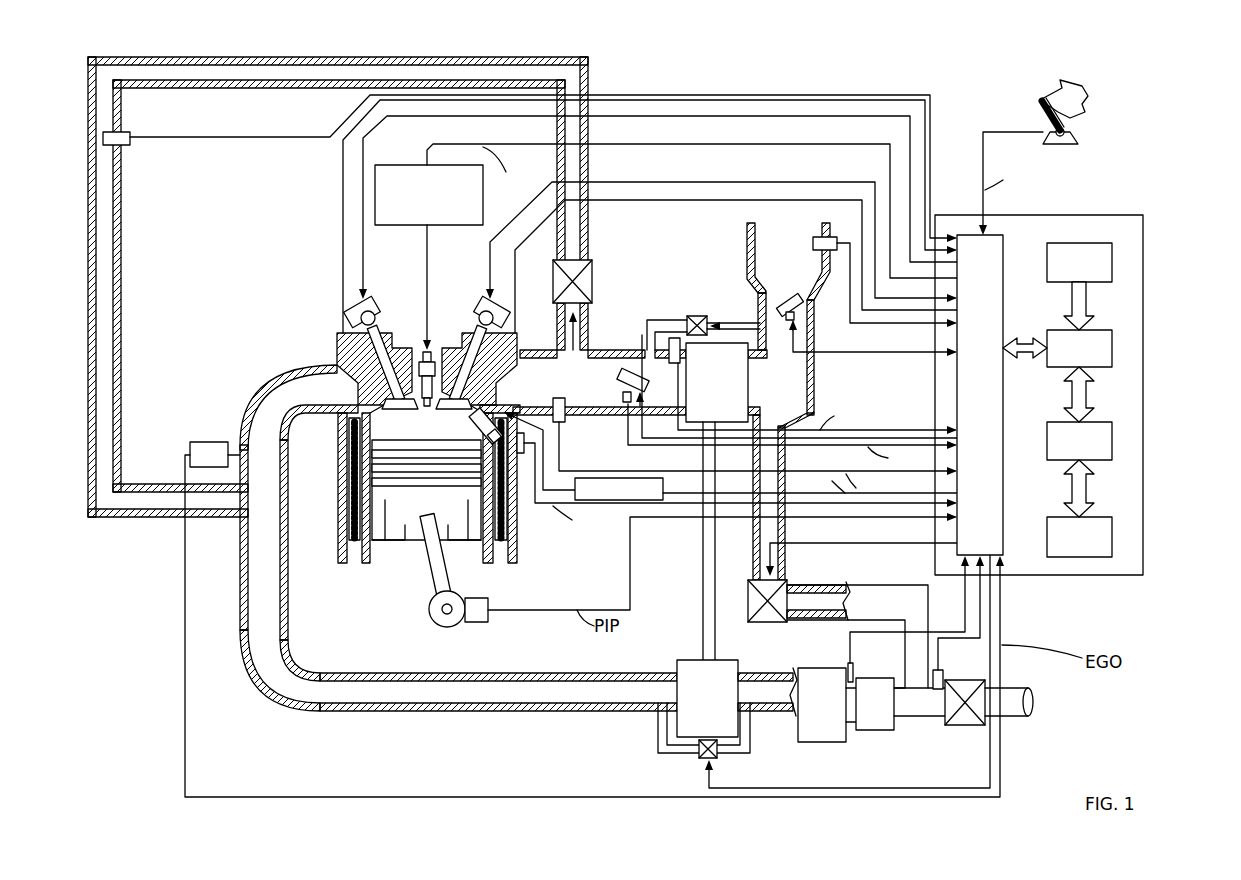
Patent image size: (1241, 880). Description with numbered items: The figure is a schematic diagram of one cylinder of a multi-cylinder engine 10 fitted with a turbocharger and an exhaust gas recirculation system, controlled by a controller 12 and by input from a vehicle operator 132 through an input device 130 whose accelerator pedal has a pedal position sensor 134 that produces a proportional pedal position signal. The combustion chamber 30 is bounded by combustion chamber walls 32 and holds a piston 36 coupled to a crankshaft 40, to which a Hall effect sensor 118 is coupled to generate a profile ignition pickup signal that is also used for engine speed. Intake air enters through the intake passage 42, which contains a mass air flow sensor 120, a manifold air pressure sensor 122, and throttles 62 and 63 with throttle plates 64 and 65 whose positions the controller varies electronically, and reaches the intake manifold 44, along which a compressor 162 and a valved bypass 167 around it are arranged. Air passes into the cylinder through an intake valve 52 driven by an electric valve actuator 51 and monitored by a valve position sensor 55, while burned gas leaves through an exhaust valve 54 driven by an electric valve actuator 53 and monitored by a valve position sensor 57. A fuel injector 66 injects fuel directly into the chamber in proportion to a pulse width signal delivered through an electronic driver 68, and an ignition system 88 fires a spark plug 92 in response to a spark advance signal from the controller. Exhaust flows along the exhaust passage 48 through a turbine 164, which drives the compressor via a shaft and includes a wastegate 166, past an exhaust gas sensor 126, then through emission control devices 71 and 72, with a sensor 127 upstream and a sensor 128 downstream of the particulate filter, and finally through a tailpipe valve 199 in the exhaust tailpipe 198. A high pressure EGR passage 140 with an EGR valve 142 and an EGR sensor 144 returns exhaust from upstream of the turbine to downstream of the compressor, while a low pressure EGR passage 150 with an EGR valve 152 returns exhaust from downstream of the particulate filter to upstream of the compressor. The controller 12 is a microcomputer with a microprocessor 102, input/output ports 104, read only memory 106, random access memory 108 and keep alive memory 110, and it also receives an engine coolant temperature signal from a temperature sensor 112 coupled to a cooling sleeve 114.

The engine 10 is at (270, 283).
The controller 12 is at (1073, 384).
The combustion chamber 30 is at (340, 508).
The combustion chamber walls 32 is at (372, 545).
The piston 36 is at (412, 520).
The crankshaft 40 is at (435, 625).
The intake passage 42 is at (795, 269).
The intake manifold 44 is at (565, 386).
The exhaust passage 48 is at (318, 396).
The electric valve actuator 51 is at (480, 294).
The intake valve 52 is at (463, 408).
The electric valve actuator 53 is at (370, 292).
The exhaust valve 54 is at (385, 368).
The valve position sensor 55 is at (505, 314).
The valve position sensor 57 is at (350, 310).
The throttle 62 is at (627, 364).
The throttle 63 is at (790, 292).
The throttle plate 64 is at (620, 374).
The throttle plate 65 is at (778, 305).
The fuel injector 66 is at (478, 428).
The electronic driver 68 is at (663, 485).
The emission control device 71 is at (833, 716).
The emission control device 72 is at (886, 716).
The ignition system 88 is at (391, 165).
The spark plug 92 is at (432, 362).
The microprocessor 102 is at (1112, 348).
The input/output ports 104 is at (1005, 242).
The read only memory 106 is at (1112, 262).
The random access memory 108 is at (1112, 442).
The keep alive memory 110 is at (1112, 538).
The temperature sensor 112 is at (520, 455).
The cooling sleeve 114 is at (512, 543).
The Hall effect sensor 118 is at (484, 625).
The mass air flow sensor 120 is at (838, 230).
The manifold air pressure sensor 122 is at (553, 404).
The exhaust gas sensor 126 is at (186, 450).
The sensor 127 is at (848, 662).
The sensor 128 is at (932, 672).
The input device 130 is at (1086, 152).
The vehicle operator 132 is at (1086, 92).
The pedal position sensor 134 is at (1076, 134).
The high pressure EGR passage 140 is at (348, 58).
The high pressure EGR valve 142 is at (592, 290).
The high pressure EGR sensor 144 is at (122, 143).
The low pressure EGR passage 150 is at (778, 560).
The low pressure EGR valve 152 is at (748, 596).
The compressor 162 is at (733, 394).
The turbine 164 is at (723, 709).
The wastegate 166 is at (718, 756).
The valved bypass 167 is at (688, 318).
The exhaust tailpipe 198 is at (1024, 712).
The tailpipe valve 199 is at (965, 727).